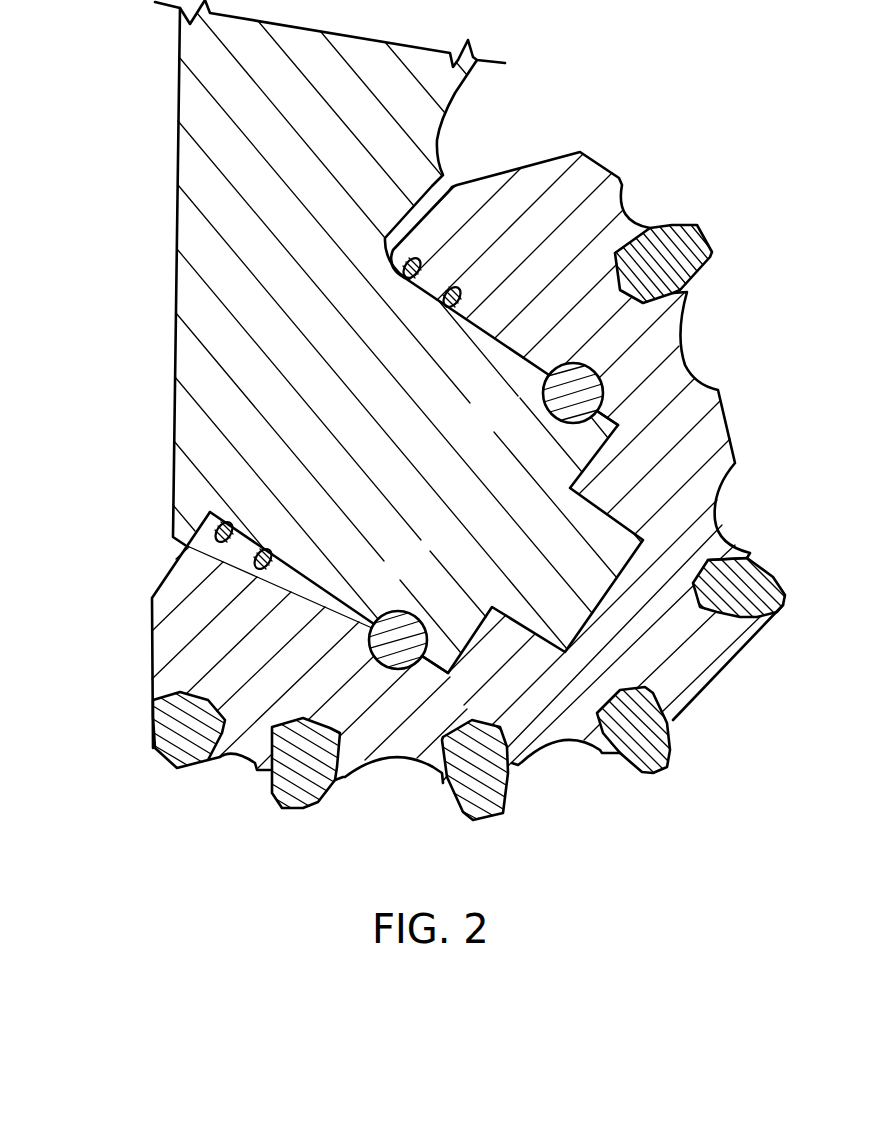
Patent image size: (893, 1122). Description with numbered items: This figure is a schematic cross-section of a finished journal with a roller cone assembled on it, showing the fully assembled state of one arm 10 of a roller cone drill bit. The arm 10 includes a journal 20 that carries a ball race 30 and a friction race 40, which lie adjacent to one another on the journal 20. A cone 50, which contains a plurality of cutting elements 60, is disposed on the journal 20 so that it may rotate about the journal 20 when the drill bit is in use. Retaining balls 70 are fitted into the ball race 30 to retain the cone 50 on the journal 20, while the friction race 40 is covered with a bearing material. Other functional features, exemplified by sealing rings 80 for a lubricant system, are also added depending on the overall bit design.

The arm 10 is at (79, 74).
The journal 20 is at (178, 278).
The ball race 30 is at (550, 408).
The friction race 40 is at (322, 578).
The cone 50 is at (705, 663).
The cutting elements 60 is at (711, 240).
The retaining balls 70 is at (600, 393).
The sealing rings 80 is at (460, 302).